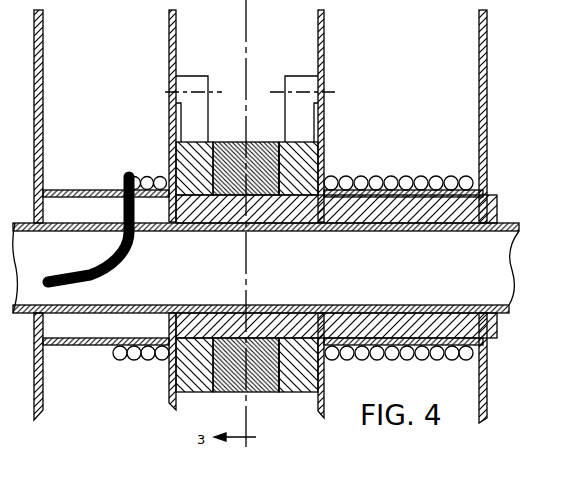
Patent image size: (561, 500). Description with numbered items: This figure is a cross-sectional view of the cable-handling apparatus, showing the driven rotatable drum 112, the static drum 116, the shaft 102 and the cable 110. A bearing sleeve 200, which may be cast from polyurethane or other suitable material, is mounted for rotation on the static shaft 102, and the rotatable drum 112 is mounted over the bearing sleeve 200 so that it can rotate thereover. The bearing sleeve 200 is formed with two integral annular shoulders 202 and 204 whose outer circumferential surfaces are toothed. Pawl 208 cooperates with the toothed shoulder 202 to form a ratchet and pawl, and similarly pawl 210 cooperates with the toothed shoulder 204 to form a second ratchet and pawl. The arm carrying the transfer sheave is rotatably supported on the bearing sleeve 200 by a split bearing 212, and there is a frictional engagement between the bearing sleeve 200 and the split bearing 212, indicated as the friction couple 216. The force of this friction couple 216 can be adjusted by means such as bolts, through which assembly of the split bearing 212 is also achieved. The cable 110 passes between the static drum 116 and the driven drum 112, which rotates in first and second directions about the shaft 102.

The shaft 102 is at (491, 232).
The cable 110 is at (122, 262).
The driven rotatable drum 112 is at (479, 33).
The static drum 116 is at (43, 52).
The bearing sleeve 200 is at (497, 200).
The annular shoulder 202 is at (312, 160).
The annular shoulder 204 is at (200, 142).
The pawl 208 is at (305, 84).
The pawl 210 is at (188, 82).
The split bearing 212 is at (283, 142).
The friction couple 216 is at (270, 225).